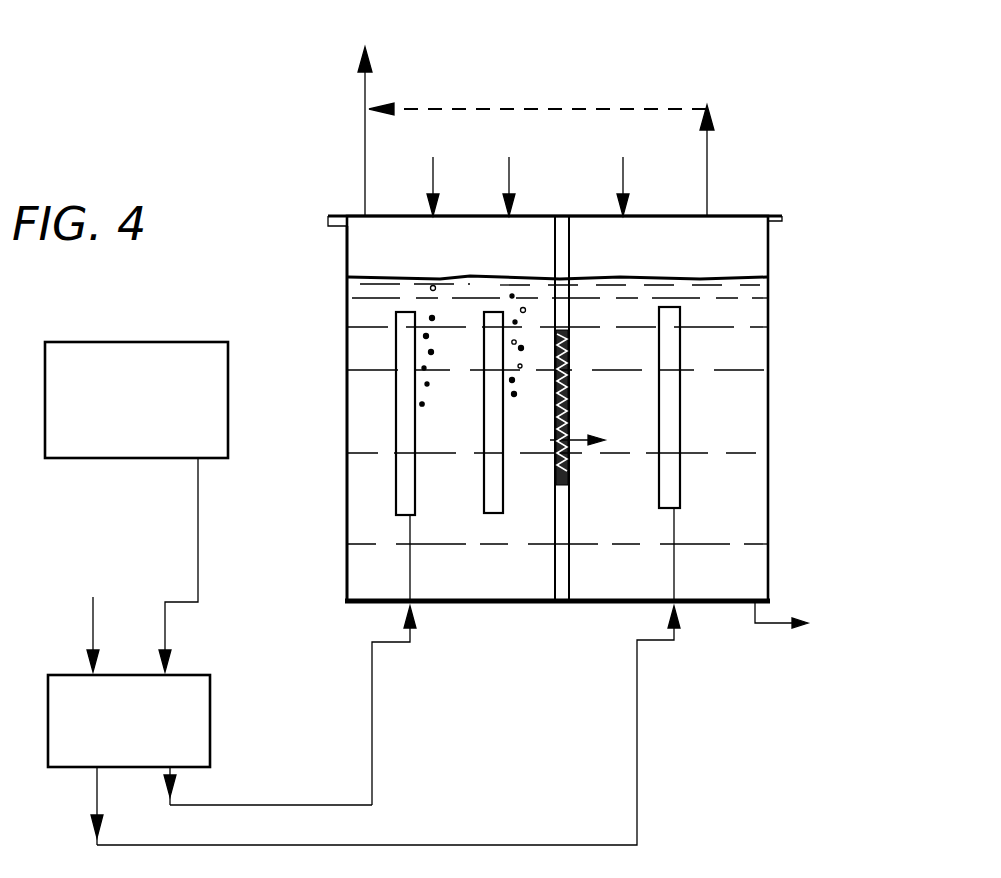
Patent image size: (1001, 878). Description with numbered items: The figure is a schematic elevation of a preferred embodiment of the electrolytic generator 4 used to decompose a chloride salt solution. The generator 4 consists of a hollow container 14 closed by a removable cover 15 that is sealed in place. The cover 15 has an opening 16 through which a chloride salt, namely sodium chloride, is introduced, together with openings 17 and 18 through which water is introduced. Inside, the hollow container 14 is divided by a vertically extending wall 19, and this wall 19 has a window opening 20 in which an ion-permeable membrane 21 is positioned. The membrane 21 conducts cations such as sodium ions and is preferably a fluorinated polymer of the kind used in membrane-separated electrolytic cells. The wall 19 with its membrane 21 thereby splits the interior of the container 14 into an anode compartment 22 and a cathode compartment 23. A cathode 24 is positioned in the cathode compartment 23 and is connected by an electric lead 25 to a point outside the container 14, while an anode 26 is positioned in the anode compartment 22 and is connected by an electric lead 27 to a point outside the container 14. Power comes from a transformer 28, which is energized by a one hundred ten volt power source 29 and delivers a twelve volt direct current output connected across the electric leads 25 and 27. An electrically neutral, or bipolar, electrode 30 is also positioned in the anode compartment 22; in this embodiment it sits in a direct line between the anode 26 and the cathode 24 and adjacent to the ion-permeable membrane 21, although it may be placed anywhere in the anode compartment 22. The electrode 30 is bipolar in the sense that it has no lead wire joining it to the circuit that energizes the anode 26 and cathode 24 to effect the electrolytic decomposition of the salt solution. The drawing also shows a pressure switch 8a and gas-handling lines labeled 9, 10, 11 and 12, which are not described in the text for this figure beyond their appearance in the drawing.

The electrolytic generator 4 is at (784, 493).
The pressure switch 8a is at (134, 341).
The hydrogen outlet conduit 9 is at (708, 153).
The oxidant gas outlet conduit 10 is at (365, 135).
The oxidant gas output 11 is at (363, 50).
The hydrogen recirculation line 12 is at (535, 108).
The hollow container 14 is at (347, 537).
The removable cover 15 is at (348, 215).
The opening 16 is at (434, 217).
The opening 17 is at (509, 218).
The opening 18 is at (623, 218).
The vertically extending wall 19 is at (582, 520).
The window opening 20 is at (569, 333).
The ion-permeable membrane 21 is at (570, 414).
The anode compartment 22 is at (368, 353).
The cathode compartment 23 is at (740, 407).
The cathode 24 is at (680, 462).
The electric lead 25 is at (675, 557).
The anode 26 is at (403, 427).
The electric lead 27 is at (411, 560).
The transformer 28 is at (212, 728).
The 110 volt power source 29 is at (92, 638).
The electrically neutral (bipolar) electrode 30 is at (493, 425).